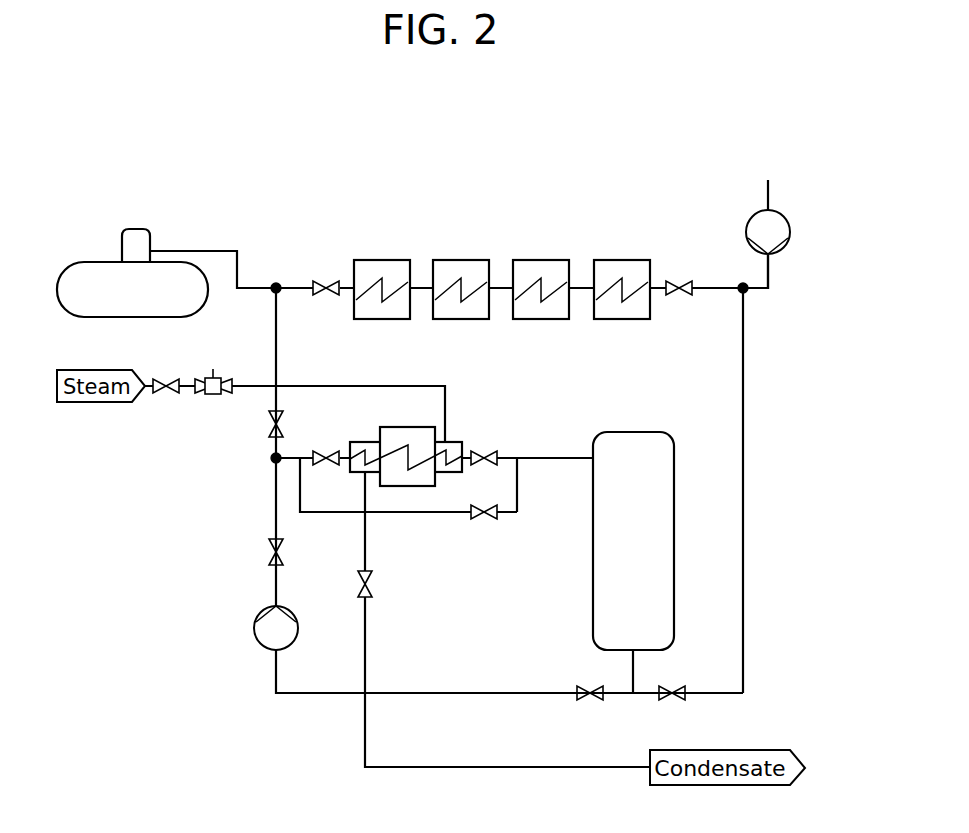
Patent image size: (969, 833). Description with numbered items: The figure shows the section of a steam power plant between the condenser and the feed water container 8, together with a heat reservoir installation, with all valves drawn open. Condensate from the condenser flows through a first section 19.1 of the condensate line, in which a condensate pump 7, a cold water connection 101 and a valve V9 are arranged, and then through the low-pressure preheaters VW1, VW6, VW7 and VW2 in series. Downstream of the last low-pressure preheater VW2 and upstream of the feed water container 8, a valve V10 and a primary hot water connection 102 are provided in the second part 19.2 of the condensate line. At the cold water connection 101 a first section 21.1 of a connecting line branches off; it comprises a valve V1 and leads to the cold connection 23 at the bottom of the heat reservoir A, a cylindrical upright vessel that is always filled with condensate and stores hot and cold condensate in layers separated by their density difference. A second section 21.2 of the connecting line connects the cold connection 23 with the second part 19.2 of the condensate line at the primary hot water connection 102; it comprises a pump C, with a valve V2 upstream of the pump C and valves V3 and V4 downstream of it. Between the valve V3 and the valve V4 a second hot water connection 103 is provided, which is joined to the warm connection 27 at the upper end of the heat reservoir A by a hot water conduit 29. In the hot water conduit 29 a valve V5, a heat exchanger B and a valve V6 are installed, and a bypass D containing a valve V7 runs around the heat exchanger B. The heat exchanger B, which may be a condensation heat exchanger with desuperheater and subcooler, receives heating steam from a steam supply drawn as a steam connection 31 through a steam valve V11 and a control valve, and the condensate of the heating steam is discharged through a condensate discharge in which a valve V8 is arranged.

The condensate pump 7 is at (787, 218).
The feed water container 8 is at (160, 272).
The first section of the condensate line 19.1 is at (771, 275).
The second part of the condensate line 19.2 is at (237, 262).
The first section of the connecting line 21.1 is at (745, 415).
The second section of the connecting line 21.2 is at (282, 523).
The cold connection 23 is at (641, 668).
The warm connection 27 is at (578, 455).
The hot water conduit 29 is at (560, 460).
The steam supply line 31 is at (370, 386).
The cold water connection 101 is at (740, 282).
The primary hot water connection 102 is at (270, 295).
The second hot water connection 103 is at (270, 465).
The heat reservoir A is at (676, 545).
The heat exchanger B is at (435, 432).
The pump C is at (262, 648).
The bypass D is at (425, 514).
The valve V1 is at (676, 700).
The valve V2 is at (585, 688).
The valve V3 is at (265, 557).
The valve V4 is at (268, 432).
The valve V5 is at (325, 450).
The valve V6 is at (497, 450).
The valve V7 is at (493, 522).
The valve V8 is at (373, 590).
The valve V9 is at (683, 300).
The valve V10 is at (325, 300).
The steam valve V11 is at (162, 400).
The low-pressure preheater VW1 is at (612, 260).
The last low-pressure preheater VW2 is at (380, 260).
The low-pressure preheater VW6 is at (537, 260).
The low-pressure preheater VW7 is at (452, 260).